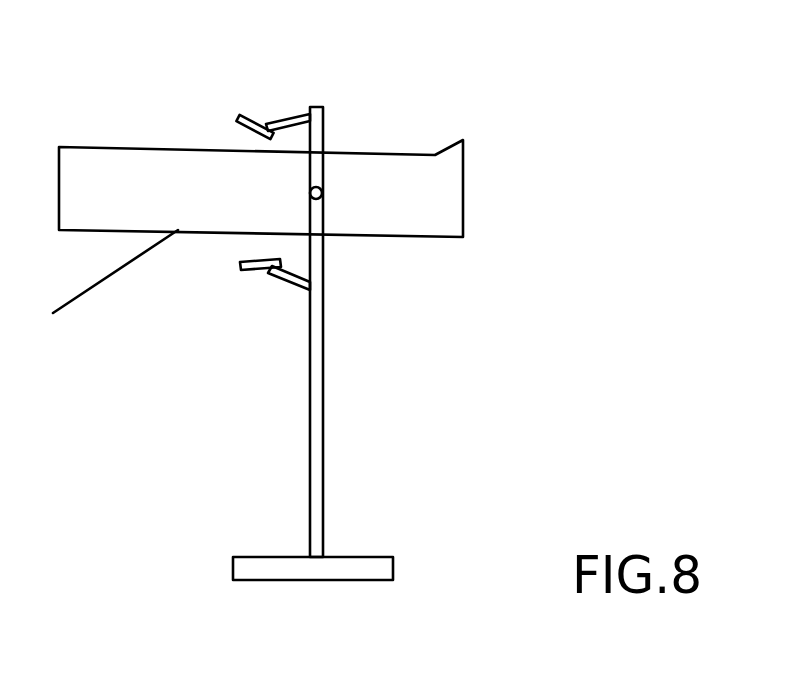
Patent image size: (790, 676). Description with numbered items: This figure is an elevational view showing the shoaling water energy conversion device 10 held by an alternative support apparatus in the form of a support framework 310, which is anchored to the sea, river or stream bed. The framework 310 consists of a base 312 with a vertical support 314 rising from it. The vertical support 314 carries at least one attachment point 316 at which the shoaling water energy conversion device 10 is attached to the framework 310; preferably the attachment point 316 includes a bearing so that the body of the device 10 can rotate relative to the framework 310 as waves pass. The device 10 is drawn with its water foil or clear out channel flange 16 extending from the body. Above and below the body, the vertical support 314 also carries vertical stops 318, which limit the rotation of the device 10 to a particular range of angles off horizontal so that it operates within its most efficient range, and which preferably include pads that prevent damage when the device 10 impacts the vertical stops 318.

The shoaling water energy conversion device 10 is at (130, 165).
The clear out channel flange 16 is at (106, 281).
The support framework 310 is at (359, 335).
The base 312 is at (338, 567).
The vertical support 314 is at (323, 440).
The attachment point 316 is at (323, 192).
The vertical stops 318 is at (283, 116).